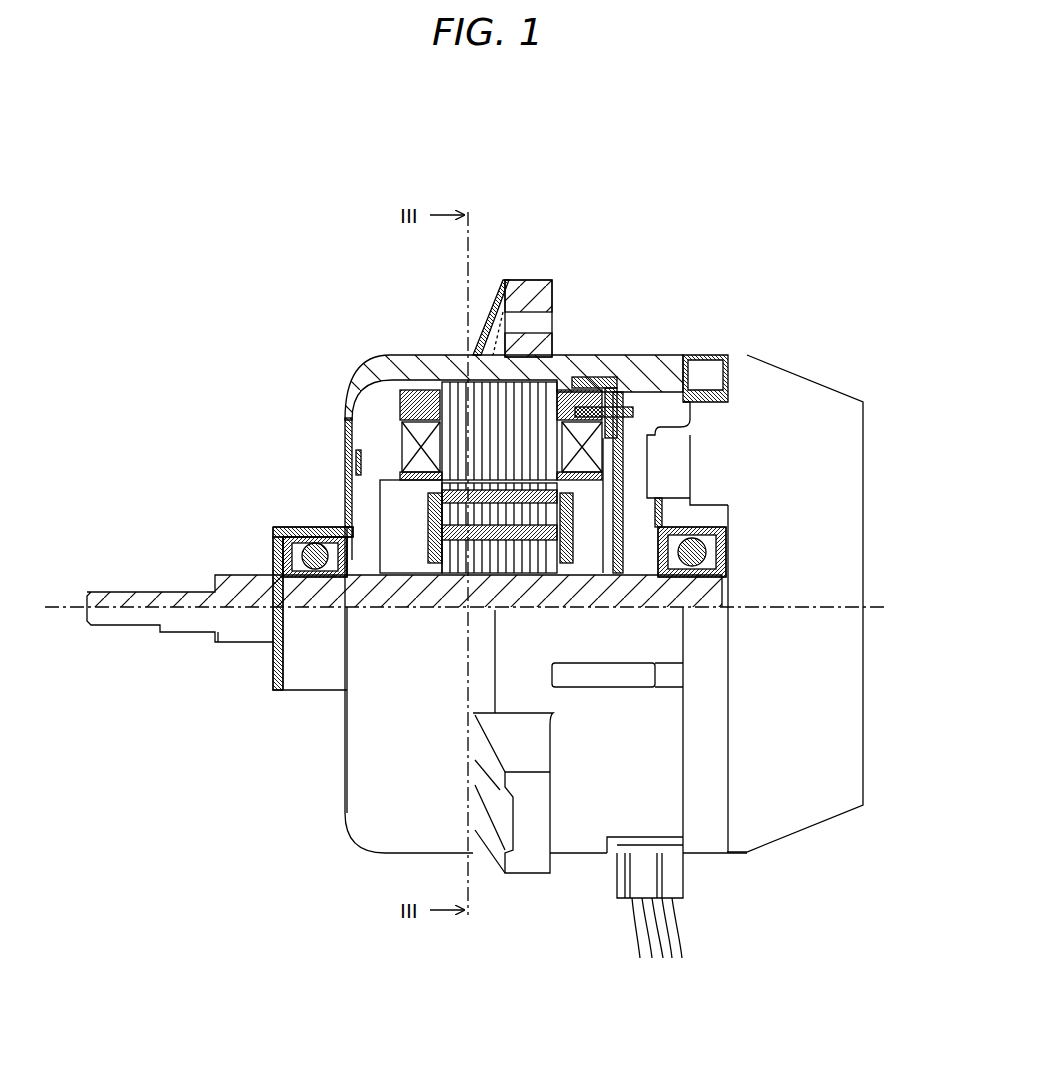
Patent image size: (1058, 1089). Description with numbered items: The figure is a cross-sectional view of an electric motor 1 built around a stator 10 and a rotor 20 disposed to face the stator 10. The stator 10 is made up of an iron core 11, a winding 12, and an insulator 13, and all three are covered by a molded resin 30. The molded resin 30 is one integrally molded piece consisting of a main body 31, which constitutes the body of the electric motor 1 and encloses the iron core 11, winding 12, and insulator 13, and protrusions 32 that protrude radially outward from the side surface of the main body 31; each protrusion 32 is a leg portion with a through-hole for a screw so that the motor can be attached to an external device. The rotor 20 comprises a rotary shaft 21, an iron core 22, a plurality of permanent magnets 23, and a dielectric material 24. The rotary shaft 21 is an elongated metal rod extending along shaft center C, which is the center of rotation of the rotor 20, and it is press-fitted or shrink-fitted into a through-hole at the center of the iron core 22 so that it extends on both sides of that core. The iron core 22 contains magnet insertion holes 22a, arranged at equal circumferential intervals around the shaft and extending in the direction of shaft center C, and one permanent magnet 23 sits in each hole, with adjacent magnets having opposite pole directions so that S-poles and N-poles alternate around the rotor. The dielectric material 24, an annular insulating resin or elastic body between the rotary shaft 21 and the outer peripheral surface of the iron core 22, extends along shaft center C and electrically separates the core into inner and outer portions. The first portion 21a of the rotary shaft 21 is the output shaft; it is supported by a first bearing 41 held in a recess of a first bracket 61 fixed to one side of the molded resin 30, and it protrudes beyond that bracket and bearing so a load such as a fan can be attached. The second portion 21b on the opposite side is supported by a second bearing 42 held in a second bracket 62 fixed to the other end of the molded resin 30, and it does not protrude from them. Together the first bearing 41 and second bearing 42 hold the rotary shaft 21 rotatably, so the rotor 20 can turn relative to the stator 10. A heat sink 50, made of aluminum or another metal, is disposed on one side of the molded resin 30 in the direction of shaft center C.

The electric motor 1 is at (100, 228).
The stator 10 is at (383, 175).
The iron core 11 is at (478, 382).
The winding 12 is at (418, 392).
The insulator 13 is at (428, 422).
The rotor 20 is at (270, 292).
The rotary shaft 21 is at (247, 587).
The first portion 21a is at (125, 588).
The second portion 21b is at (727, 590).
The iron core 22 is at (430, 487).
The magnet insertion hole 22a is at (480, 512).
The permanent magnet 23 is at (537, 492).
The dielectric material 24 is at (443, 440).
The molded resin 30 is at (625, 175).
The main body 31 is at (505, 290).
The protrusion 32 is at (540, 300).
The first bearing 41 is at (305, 537).
The second bearing 42 is at (723, 545).
The heat sink 50 is at (843, 690).
The first bracket 61 is at (280, 527).
The second bracket 62 is at (702, 355).
The shaft center C is at (882, 607).